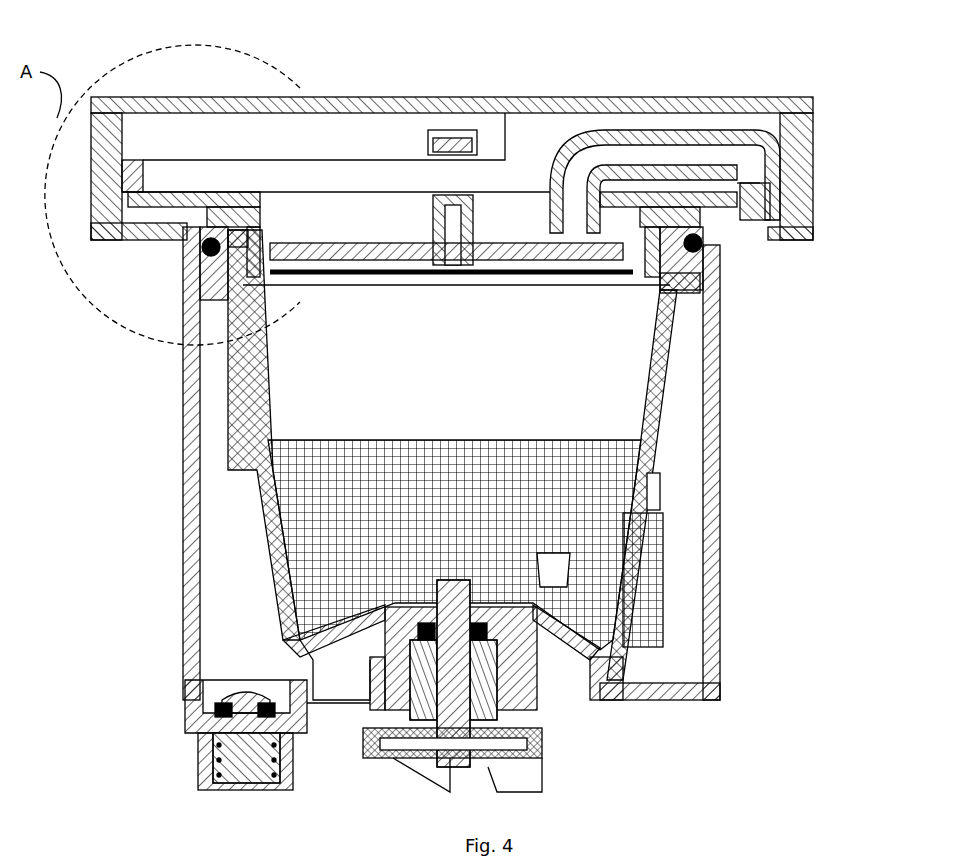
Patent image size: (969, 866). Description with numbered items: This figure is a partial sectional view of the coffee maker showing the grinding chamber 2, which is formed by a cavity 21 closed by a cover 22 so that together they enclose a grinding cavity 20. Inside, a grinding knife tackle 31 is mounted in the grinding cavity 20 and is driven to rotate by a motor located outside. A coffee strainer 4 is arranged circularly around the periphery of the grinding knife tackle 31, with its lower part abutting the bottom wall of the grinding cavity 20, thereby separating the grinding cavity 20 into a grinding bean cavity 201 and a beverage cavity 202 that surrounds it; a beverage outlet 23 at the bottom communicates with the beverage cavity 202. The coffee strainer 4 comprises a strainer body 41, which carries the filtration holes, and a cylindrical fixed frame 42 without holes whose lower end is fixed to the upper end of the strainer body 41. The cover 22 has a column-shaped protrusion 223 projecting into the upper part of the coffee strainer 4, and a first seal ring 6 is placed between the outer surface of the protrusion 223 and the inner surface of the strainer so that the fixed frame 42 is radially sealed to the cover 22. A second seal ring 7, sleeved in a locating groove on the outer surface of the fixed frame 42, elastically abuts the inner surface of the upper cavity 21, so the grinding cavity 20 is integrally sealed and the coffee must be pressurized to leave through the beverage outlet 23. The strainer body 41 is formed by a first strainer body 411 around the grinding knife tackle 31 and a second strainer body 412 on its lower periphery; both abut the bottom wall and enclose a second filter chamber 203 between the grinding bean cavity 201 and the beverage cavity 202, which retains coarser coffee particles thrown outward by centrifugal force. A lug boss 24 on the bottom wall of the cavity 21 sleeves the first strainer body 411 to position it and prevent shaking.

The grinding chamber 2 is at (503, 376).
The cover 22 is at (677, 95).
The cavity 21 is at (723, 327).
The first seal ring 6 is at (239, 200).
The second seal ring 7 is at (190, 262).
The protrusion 223 is at (226, 305).
The coffee strainer 4 is at (376, 465).
The strainer body 41 is at (389, 465).
The first strainer body 411 is at (373, 510).
The second strainer body 412 is at (540, 545).
The fixed frame 42 is at (226, 387).
The grinding cavity 20 is at (676, 506).
The grinding bean cavity 201 is at (493, 372).
The second filter chamber 203 is at (655, 497).
The beverage cavity 202 is at (751, 529).
The lug boss 24 is at (300, 655).
The grinding knife tackle 31 is at (577, 657).
The beverage outlet 23 is at (212, 790).